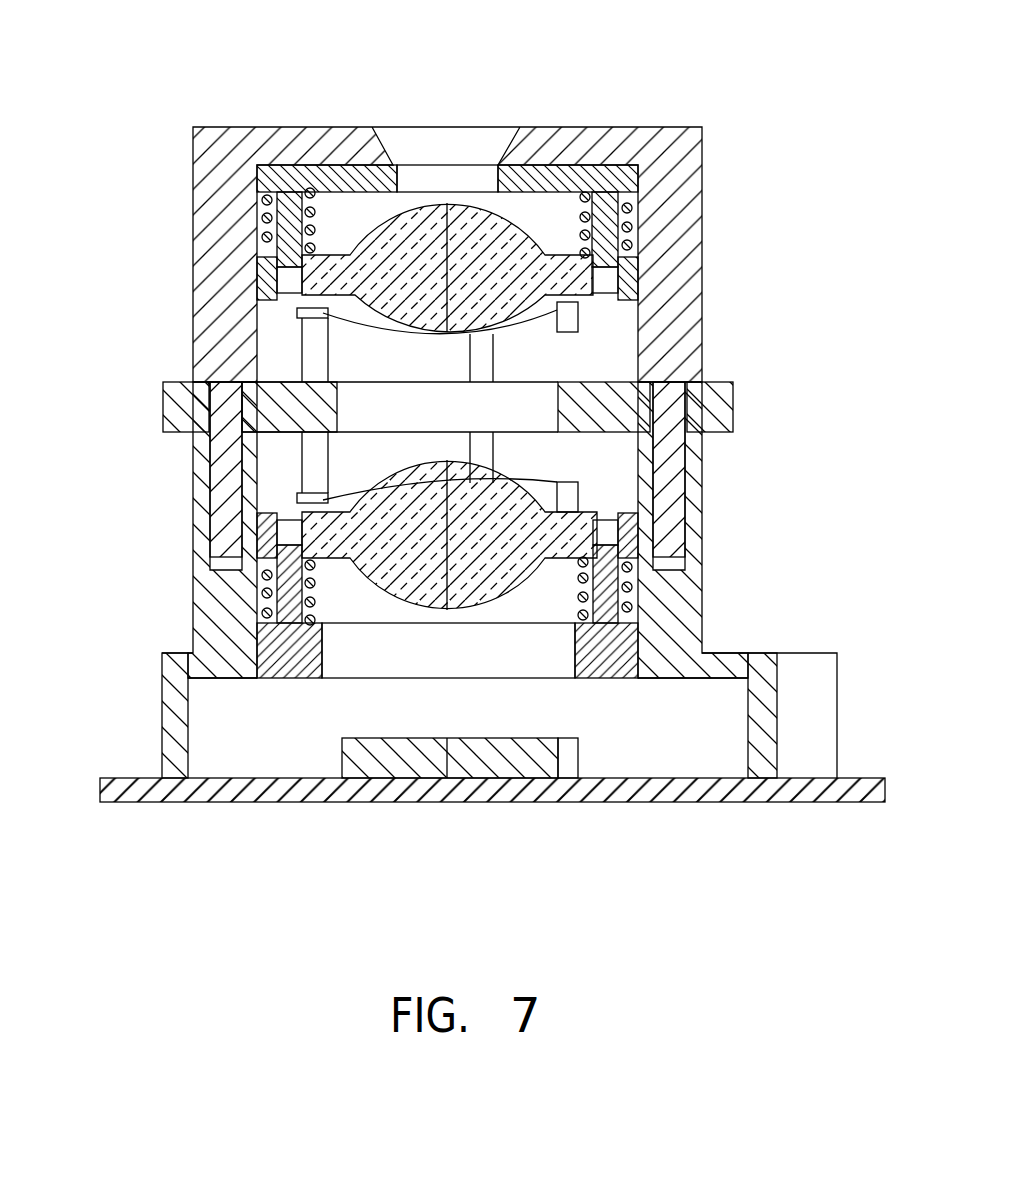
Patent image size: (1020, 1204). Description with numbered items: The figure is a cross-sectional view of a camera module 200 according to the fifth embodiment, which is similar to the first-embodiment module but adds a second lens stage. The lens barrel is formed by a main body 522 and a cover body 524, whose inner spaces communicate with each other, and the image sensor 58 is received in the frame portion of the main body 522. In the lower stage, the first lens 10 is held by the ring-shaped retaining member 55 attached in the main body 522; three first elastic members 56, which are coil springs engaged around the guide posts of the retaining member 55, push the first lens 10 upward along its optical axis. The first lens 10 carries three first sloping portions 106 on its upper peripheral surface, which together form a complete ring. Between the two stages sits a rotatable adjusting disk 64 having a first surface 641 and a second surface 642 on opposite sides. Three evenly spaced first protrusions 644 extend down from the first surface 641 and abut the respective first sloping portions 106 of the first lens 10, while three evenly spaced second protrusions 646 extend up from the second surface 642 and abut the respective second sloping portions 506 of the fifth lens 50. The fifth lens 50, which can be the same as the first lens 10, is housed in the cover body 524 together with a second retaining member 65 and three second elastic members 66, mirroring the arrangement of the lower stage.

The camera module 200 is at (466, 37).
The first lens 10 is at (575, 540).
The fifth lens 50 is at (560, 277).
The retaining member 55 is at (622, 640).
The first elastic members 56 is at (257, 593).
The image sensor 58 is at (495, 755).
The rotatable adjusting disk 64 is at (728, 390).
The first surface 641 is at (280, 440).
The second surface 642 is at (280, 372).
The first protrusions 644 is at (320, 467).
The second protrusions 646 is at (320, 345).
The second retaining member 65 is at (623, 183).
The second elastic members 66 is at (262, 217).
The first sloping portions 106 is at (520, 492).
The second sloping portions 506 is at (540, 332).
The main body 522 is at (683, 600).
The cover body 524 is at (675, 227).